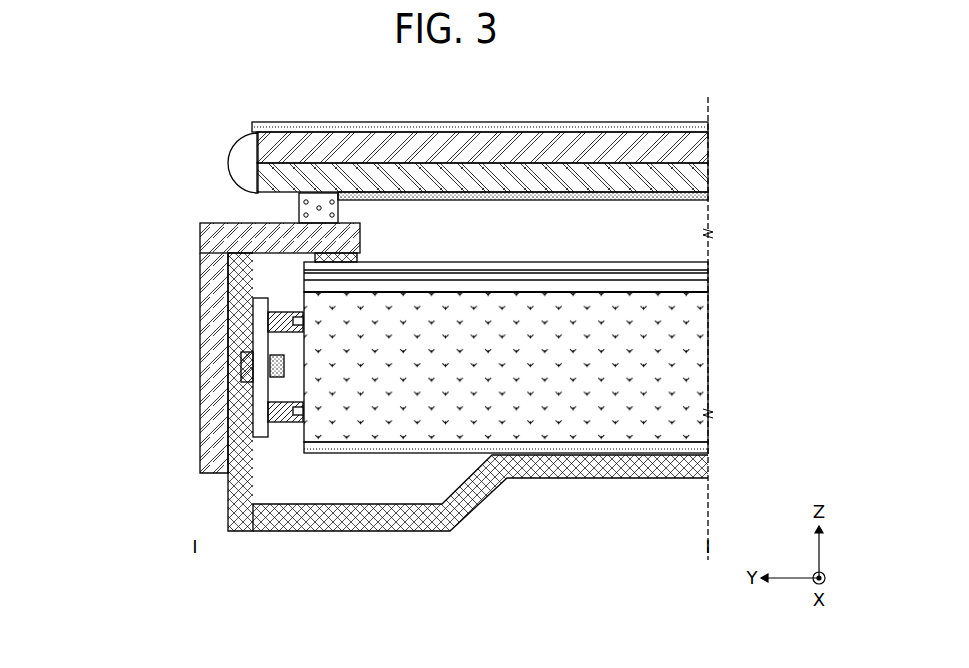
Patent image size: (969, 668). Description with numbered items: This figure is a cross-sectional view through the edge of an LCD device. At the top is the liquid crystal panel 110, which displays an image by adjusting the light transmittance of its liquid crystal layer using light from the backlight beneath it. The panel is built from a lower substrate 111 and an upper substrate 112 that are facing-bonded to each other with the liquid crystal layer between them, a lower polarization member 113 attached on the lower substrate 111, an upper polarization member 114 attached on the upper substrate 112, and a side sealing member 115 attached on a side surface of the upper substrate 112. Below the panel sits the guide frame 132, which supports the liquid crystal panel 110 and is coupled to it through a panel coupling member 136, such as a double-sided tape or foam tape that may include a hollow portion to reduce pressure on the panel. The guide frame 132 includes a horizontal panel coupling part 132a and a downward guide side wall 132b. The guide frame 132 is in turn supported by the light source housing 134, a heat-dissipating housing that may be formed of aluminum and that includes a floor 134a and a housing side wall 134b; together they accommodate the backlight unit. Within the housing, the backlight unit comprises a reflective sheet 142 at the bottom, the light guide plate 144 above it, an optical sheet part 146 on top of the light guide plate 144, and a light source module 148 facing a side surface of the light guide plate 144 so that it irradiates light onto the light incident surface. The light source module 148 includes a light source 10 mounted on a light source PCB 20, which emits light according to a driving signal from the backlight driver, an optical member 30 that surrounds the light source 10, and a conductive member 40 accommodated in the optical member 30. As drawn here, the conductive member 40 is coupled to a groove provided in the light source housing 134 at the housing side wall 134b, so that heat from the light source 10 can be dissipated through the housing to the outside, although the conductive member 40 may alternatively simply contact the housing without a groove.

The liquid crystal panel 110 is at (541, 165).
The lower substrate 111 is at (713, 178).
The upper substrate 112 is at (713, 153).
The lower polarization member 113 is at (557, 199).
The upper polarization member 114 is at (713, 131).
The side sealing member 115 is at (243, 160).
The panel coupling member 136 is at (298, 212).
The guide frame 132 is at (217, 338).
The panel coupling part 132a is at (248, 232).
The guide side wall 132b is at (175, 363).
The light source housing 134 is at (446, 444).
The floor 134a is at (480, 526).
The housing side wall 134b is at (235, 482).
The light source module 148 is at (183, 356).
The optical member 30 is at (290, 313).
The conductive member 40 is at (232, 347).
The light source 10 is at (268, 362).
The light source PCB 20 is at (262, 388).
The optical sheet part 146 is at (716, 262).
The light guide plate 144 is at (713, 366).
The reflective sheet 142 is at (713, 450).